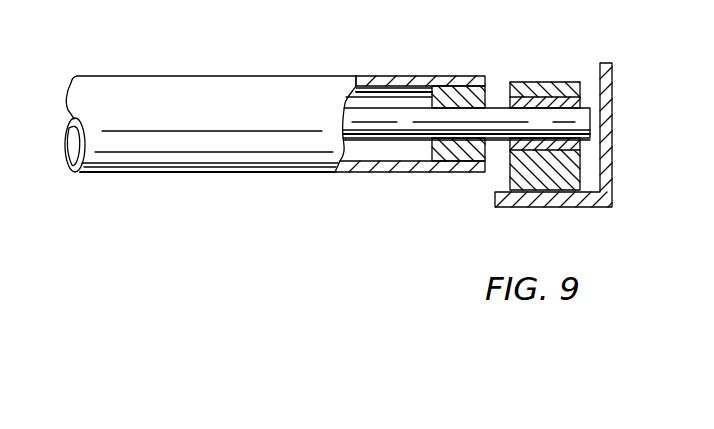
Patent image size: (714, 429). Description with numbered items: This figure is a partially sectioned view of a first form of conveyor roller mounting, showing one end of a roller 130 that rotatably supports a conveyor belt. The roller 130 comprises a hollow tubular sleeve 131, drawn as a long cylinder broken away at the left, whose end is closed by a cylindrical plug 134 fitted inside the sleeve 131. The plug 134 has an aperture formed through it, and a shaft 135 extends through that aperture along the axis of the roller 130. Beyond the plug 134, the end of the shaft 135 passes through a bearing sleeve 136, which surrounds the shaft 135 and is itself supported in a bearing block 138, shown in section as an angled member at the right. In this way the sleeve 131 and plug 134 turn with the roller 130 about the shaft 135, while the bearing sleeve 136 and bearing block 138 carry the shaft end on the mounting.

The roller 130 is at (198, 70).
The hollow tubular sleeve 131 is at (383, 165).
The cylindrical plug 134 is at (458, 98).
The shaft 135 is at (375, 117).
The bearing sleeve 136 is at (548, 95).
The bearing block 138 is at (565, 176).